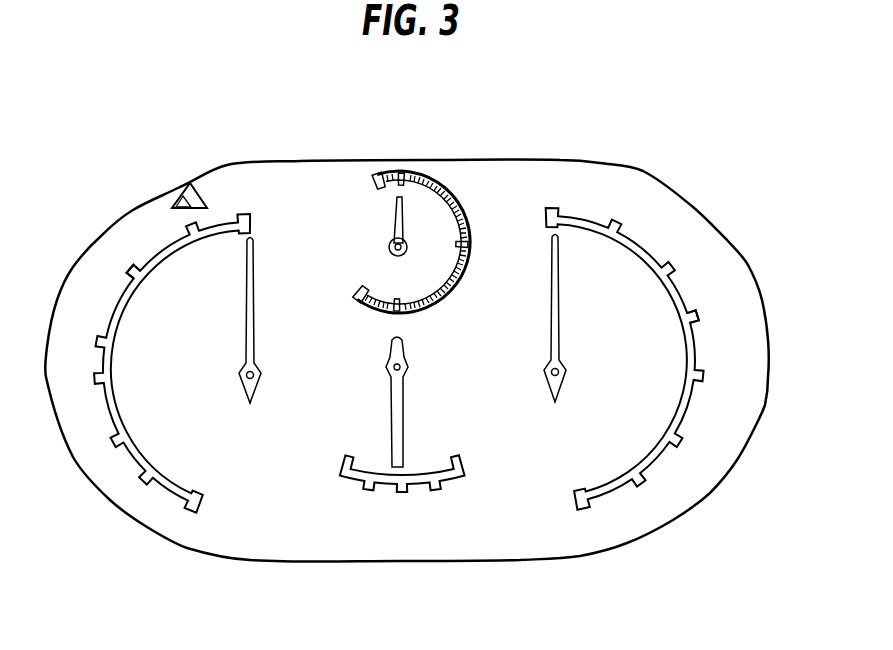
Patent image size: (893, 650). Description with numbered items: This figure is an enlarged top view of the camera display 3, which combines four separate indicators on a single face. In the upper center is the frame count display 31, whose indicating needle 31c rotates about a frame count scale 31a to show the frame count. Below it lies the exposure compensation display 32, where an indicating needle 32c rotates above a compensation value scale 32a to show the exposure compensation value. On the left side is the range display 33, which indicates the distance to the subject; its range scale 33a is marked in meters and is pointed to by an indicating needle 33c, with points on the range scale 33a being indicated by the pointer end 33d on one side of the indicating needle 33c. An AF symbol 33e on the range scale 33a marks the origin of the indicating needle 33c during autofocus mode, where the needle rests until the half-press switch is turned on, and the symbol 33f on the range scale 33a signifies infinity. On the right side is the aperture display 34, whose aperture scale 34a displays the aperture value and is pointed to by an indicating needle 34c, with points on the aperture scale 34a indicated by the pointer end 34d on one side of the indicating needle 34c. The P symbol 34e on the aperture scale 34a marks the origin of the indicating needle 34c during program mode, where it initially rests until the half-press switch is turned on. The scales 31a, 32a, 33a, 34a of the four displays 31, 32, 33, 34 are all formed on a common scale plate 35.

The display 3 is at (541, 158).
The frame count display 31 is at (424, 162).
The frame count scale 31a is at (458, 208).
The indicating needle 31c is at (392, 240).
The exposure compensation display 32 is at (388, 541).
The compensation value scale 32a is at (351, 525).
The indicating needle 32c is at (400, 431).
The range display 33 is at (147, 228).
The range scale 33a is at (126, 442).
The indicating needle 33c is at (253, 268).
The pointer end 33d is at (130, 295).
The AF symbol 33e is at (230, 177).
The infinity symbol 33f is at (181, 188).
The aperture display 34 is at (658, 225).
The aperture scale 34a is at (573, 215).
The indicating needle 34c is at (547, 282).
The pointer end 34d is at (680, 281).
The P symbol 34e is at (566, 170).
The scale plate 35 is at (328, 382).